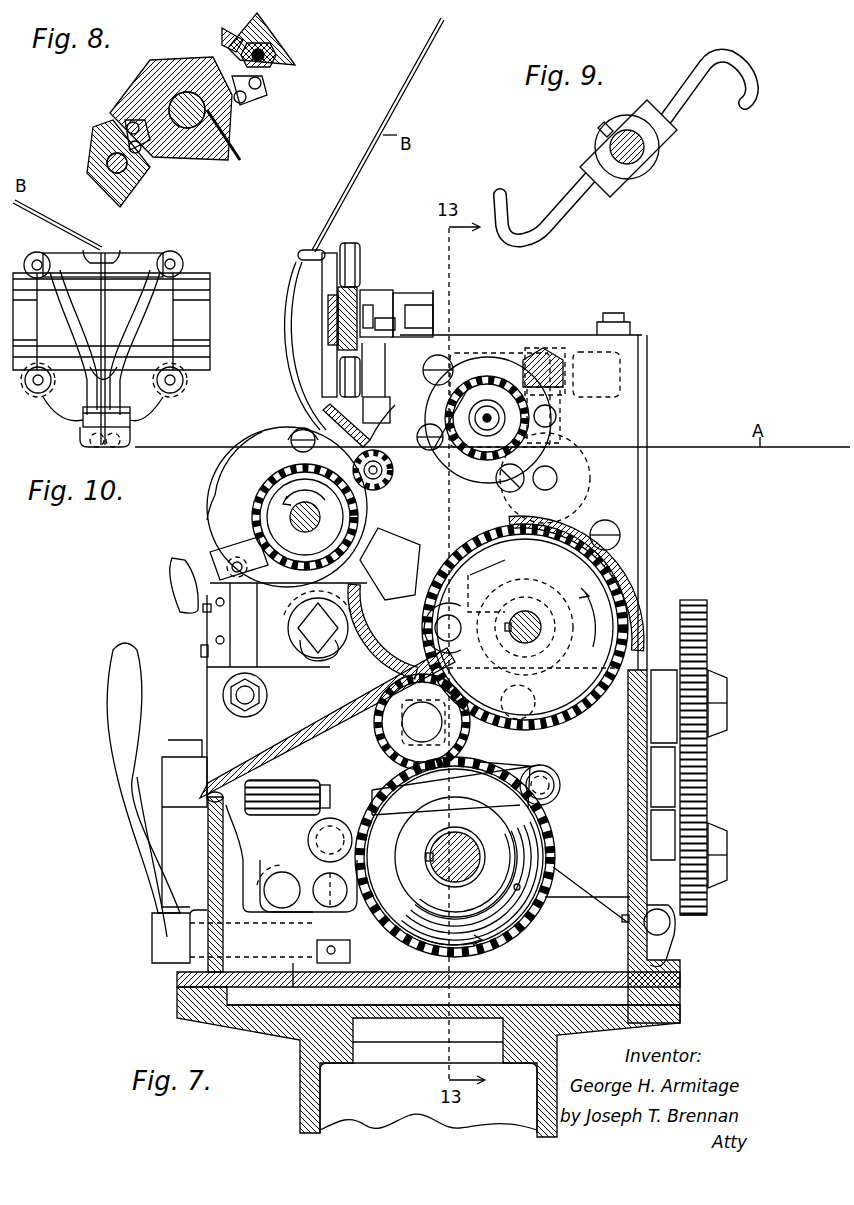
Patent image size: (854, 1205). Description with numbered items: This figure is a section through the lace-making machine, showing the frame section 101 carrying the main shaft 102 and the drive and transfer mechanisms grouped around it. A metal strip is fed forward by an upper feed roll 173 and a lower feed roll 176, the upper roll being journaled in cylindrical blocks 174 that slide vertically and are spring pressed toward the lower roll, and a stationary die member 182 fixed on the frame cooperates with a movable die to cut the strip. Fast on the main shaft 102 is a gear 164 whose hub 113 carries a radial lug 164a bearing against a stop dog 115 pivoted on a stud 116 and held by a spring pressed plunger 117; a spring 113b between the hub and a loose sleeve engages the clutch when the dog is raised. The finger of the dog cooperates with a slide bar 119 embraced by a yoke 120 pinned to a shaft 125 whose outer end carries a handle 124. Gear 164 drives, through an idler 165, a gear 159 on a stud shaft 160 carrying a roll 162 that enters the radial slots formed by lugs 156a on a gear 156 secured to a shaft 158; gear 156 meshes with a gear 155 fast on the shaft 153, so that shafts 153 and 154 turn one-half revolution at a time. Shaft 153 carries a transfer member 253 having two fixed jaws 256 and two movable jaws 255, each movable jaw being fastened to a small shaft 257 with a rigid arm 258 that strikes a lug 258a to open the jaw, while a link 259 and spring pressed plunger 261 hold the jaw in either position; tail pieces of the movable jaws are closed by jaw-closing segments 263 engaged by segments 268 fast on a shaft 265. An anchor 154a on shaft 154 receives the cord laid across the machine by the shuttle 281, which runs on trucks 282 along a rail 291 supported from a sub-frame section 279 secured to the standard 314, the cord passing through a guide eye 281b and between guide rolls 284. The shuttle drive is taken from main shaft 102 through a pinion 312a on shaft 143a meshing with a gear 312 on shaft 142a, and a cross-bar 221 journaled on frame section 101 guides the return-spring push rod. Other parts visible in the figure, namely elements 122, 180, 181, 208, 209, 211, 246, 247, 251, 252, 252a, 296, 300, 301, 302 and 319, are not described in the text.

In FIG. 7, the frame section 101 is at (640, 547).
In FIG. 7, the main shaft 102 is at (455, 857).
In FIG. 7, the hub 113 is at (540, 827).
In FIG. 7, the spring 113b is at (517, 887).
In FIG. 7, the stop dog 115 is at (443, 788).
In FIG. 7, the stud 116 is at (330, 840).
In FIG. 7, the spring pressed plunger 117 is at (327, 783).
In FIG. 7, the slide bar 119 is at (282, 872).
In FIG. 7, the yoke 120 is at (350, 950).
In FIG. 7, the roller 122 is at (528, 770).
In FIG. 7, the handle 124 is at (122, 810).
In FIG. 7, the shaft 125 is at (453, 985).
In FIG. 7, the shaft 142a is at (728, 703).
In FIG. 7, the shaft 143a is at (728, 850).
In FIG. 7, the shaft 153 is at (290, 517).
In FIG. 9, the shaft 154 is at (645, 153).
In FIG. 9, the anchor 154a is at (620, 183).
In FIG. 7, the anchor 154a is at (172, 568).
In FIG. 7, the gear 155 is at (262, 522).
In FIG. 7, the gear 156 is at (547, 525).
In FIG. 7, the lugs 156a is at (400, 577).
In FIG. 7, the shaft 158 is at (390, 564).
In FIG. 7, the gear 159 is at (603, 592).
In FIG. 7, the stud shaft 160 is at (525, 614).
In FIG. 7, the roll 162 is at (461, 630).
In FIG. 7, the gear 164 is at (523, 937).
In FIG. 7, the radial lug 164a is at (400, 780).
In FIG. 7, the idler 165 is at (470, 738).
In FIG. 7, the upper feed roll 173 is at (566, 412).
In FIG. 7, the cylindrical blocks 174 is at (642, 420).
In FIG. 7, the lower feed roll 176 is at (558, 485).
In FIG. 7, the bracket 180 is at (632, 378).
In FIG. 7, the block 181 is at (379, 383).
In FIG. 7, the stationary die member 182 is at (393, 425).
In FIG. 7, the plate 208 is at (263, 433).
In FIG. 7, the flange 209 is at (212, 497).
In FIG. 7, the bolt 211 is at (222, 695).
In FIG. 7, the cross-bar 221 is at (273, 887).
In FIG. 7, the rim 246 is at (228, 463).
In FIG. 7, the bracket 247 is at (210, 628).
In FIG. 7, the link 251 is at (320, 612).
In FIG. 7, the cam 252 is at (287, 593).
In FIG. 7, the cam lobe 252a is at (283, 660).
In FIG. 7, the transfer member 253 is at (305, 517).
In FIG. 8, the movable jaws 255 is at (222, 42).
In FIG. 8, the fixed jaws 256 is at (277, 38).
In FIG. 8, the small shaft 257 is at (293, 70).
In FIG. 7, the rigid arm 258 is at (233, 543).
In FIG. 7, the lug 258a is at (203, 645).
In FIG. 8, the link 259 is at (260, 97).
In FIG. 8, the spring pressed plunger 261 is at (243, 117).
In FIG. 7, the jaw-closing segments 263 is at (488, 418).
In FIG. 7, the shaft 265 is at (492, 416).
In FIG. 7, the segments 268 is at (489, 412).
In FIG. 7, the sub-frame section 279 is at (672, 972).
In FIG. 10, the shuttle 281 is at (103, 349).
In FIG. 7, the shuttle 281 is at (310, 297).
In FIG. 10, the guide eye 281b is at (110, 253).
In FIG. 7, the guide eye 281b is at (302, 250).
In FIG. 10, the trucks 282 is at (37, 252).
In FIG. 7, the trucks 282 is at (350, 243).
In FIG. 10, the guide rolls 284 is at (112, 448).
In FIG. 7, the guide rolls 284 is at (327, 417).
In FIG. 10, the rail 291 is at (193, 353).
In FIG. 7, the rail 291 is at (350, 290).
In FIG. 10, the block 296 is at (190, 317).
In FIG. 7, the block 296 is at (328, 312).
In FIG. 7, the clutch member 300 is at (418, 293).
In FIG. 7, the housing block 301 is at (433, 295).
In FIG. 7, the pin 302 is at (368, 300).
In FIG. 7, the gear 312 is at (708, 623).
In FIG. 7, the pinion 312a is at (708, 905).
In FIG. 7, the standard 314 is at (177, 1007).
In FIG. 7, the pedestal 319 is at (428, 1098).